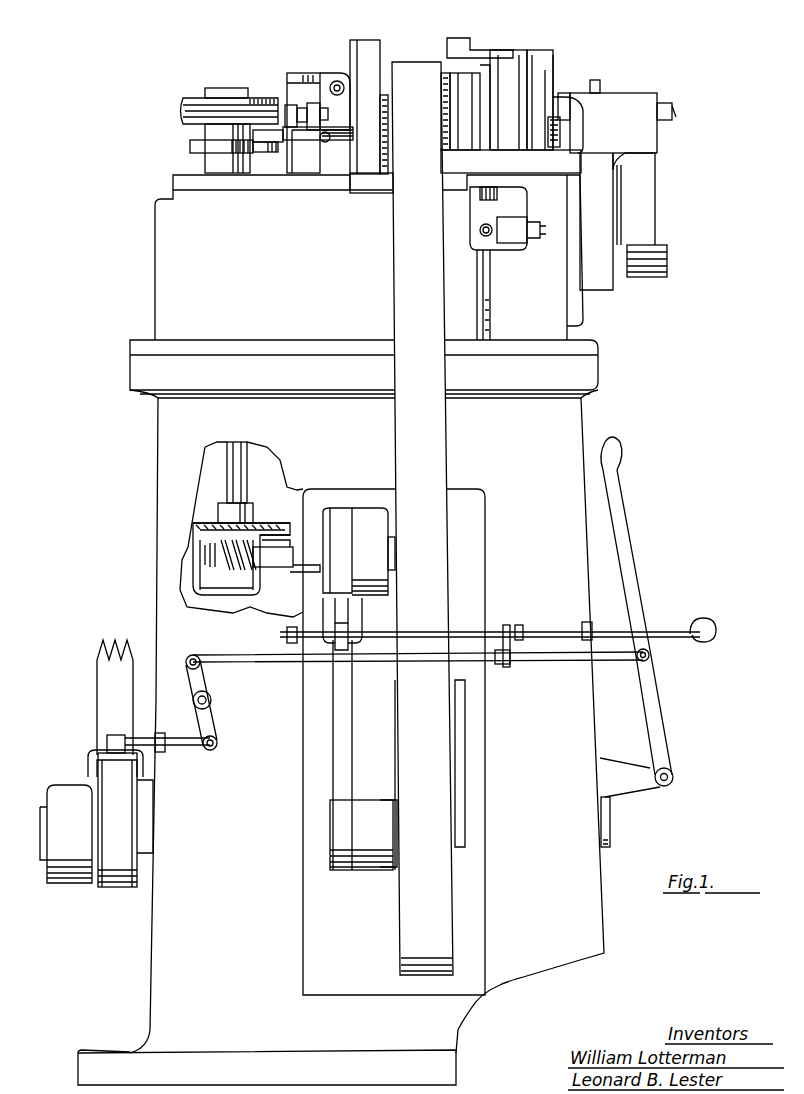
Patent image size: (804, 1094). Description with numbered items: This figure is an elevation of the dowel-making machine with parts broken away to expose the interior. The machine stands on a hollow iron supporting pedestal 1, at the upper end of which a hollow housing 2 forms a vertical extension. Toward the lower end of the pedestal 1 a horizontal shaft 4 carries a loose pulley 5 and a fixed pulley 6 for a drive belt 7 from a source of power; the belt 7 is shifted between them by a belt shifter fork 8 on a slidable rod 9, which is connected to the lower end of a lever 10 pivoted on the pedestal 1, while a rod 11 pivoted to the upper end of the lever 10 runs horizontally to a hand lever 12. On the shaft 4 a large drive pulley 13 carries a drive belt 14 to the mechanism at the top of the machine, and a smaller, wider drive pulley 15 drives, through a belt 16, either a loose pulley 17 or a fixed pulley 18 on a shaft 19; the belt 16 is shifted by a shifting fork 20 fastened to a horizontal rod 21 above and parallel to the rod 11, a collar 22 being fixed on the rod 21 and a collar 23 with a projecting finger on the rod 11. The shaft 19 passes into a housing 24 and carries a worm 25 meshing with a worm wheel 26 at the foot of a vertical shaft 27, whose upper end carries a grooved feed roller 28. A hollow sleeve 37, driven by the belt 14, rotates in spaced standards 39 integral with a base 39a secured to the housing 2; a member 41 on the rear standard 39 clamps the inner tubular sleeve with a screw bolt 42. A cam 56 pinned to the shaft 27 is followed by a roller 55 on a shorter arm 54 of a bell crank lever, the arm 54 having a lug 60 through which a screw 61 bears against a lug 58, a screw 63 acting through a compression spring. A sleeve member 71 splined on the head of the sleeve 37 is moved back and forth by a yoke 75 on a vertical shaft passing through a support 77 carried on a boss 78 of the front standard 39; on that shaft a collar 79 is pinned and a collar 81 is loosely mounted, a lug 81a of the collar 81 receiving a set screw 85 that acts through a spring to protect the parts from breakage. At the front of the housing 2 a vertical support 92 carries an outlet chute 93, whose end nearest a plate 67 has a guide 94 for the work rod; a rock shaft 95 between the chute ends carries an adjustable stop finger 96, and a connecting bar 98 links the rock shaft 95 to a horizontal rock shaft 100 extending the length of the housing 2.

The hollow supporting pedestal 1 is at (572, 424).
The hollow housing 2 is at (165, 236).
The shaft 4 is at (45, 833).
The loose pulley 5 is at (76, 880).
The fixed pulley 6 is at (103, 883).
The drive belt 7 is at (103, 698).
The belt shifter fork 8 is at (116, 736).
The slidable rod 9 is at (183, 746).
The lever 10 is at (209, 717).
The rod 11 is at (382, 663).
The hand lever 12 is at (640, 612).
The drive pulley 13 is at (453, 752).
The drive belt 14 is at (440, 588).
The drive pulley 15 is at (370, 870).
The belt 16 is at (348, 745).
The loose pulley 17 is at (380, 522).
The fixed pulley 18 is at (350, 506).
The shaft 19 is at (282, 568).
The shifting fork 20 is at (362, 620).
The horizontal rod 21 is at (505, 626).
The collar 22 is at (524, 627).
The collar 23 is at (500, 665).
The housing 24 is at (265, 535).
The worm 25 is at (228, 575).
The worm wheel 26 is at (195, 566).
The vertical shaft 27 is at (243, 468).
The grooved feed roller 28 is at (200, 112).
The hollow sleeve 37 is at (440, 115).
The standards 39 is at (366, 50).
The base 39a is at (385, 192).
The member 41 is at (337, 141).
The screw bolt 42 is at (333, 80).
The shorter arm 54 is at (278, 143).
The roller 55 is at (254, 175).
The cam 56 is at (192, 146).
The projecting lug 58 is at (286, 108).
The lug 60 is at (312, 105).
The screw 61 is at (336, 116).
The screw 63 is at (300, 160).
The plate 67 is at (565, 80).
The sleeve member 71 is at (540, 62).
The yoke 75 is at (556, 120).
The support 77 is at (492, 72).
The boss or projection 78 is at (460, 88).
The collar 79 is at (520, 245).
The collar 81 is at (515, 202).
The lug or projection 81a is at (482, 214).
The set screw 85 is at (482, 237).
The vertical support 92 is at (603, 215).
The outlet chute 93 is at (622, 110).
The guide 94 is at (563, 93).
The rock shaft 95 is at (674, 112).
The stop finger 96 is at (596, 80).
The connecting bar 98 is at (656, 197).
The horizontal rock shaft 100 is at (668, 265).